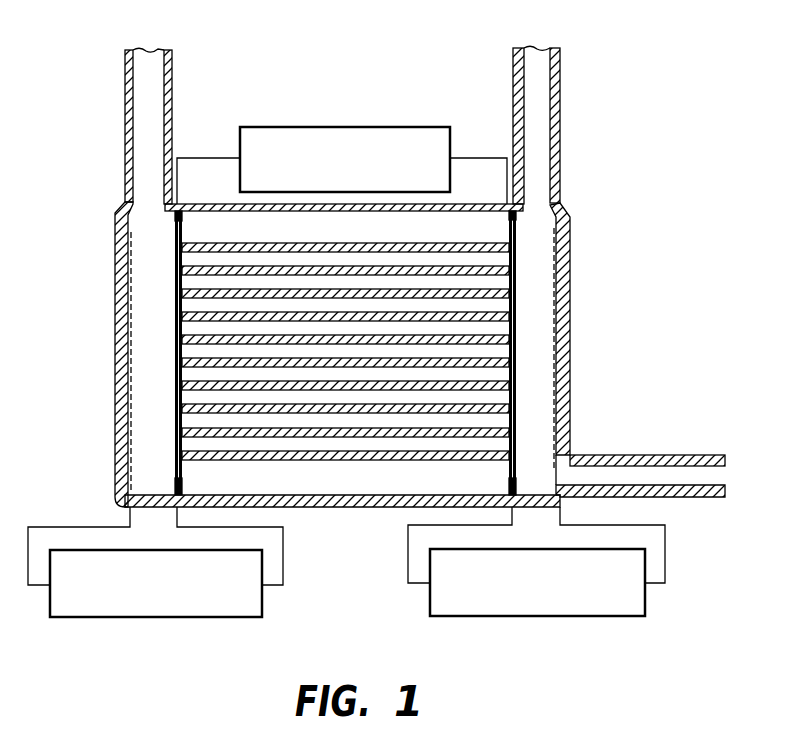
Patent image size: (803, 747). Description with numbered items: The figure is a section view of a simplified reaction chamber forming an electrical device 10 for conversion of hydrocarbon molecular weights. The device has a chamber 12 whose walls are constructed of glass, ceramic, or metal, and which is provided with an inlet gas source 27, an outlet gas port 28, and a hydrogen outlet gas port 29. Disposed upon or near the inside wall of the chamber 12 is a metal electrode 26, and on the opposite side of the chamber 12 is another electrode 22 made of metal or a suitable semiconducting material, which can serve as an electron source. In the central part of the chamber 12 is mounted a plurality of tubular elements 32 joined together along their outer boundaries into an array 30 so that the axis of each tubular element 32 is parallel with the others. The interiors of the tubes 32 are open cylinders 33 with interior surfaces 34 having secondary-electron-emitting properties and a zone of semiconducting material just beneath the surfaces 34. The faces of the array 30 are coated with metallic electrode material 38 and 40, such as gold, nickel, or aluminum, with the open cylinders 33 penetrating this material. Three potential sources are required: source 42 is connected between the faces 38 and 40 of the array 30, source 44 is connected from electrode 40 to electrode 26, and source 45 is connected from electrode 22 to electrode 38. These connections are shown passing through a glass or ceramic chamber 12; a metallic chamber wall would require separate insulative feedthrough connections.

The electrical device 10 is at (95, 286).
The chamber 12 is at (313, 508).
The electrode 22 is at (143, 436).
The electrode 26 is at (562, 318).
The inlet gas source 27 is at (545, 73).
The outlet gas port 28 is at (716, 474).
The hydrogen outlet gas port 29 is at (151, 73).
The array of tubular elements 30 is at (295, 240).
The tubular element 32 is at (222, 337).
The open cylinder 33 is at (203, 399).
The interior surface 34 is at (350, 244).
The metallic electrode material 38 is at (175, 258).
The metallic electrode material 40 is at (518, 272).
The potential source 42 is at (400, 127).
The potential source 44 is at (608, 615).
The potential source 45 is at (227, 615).